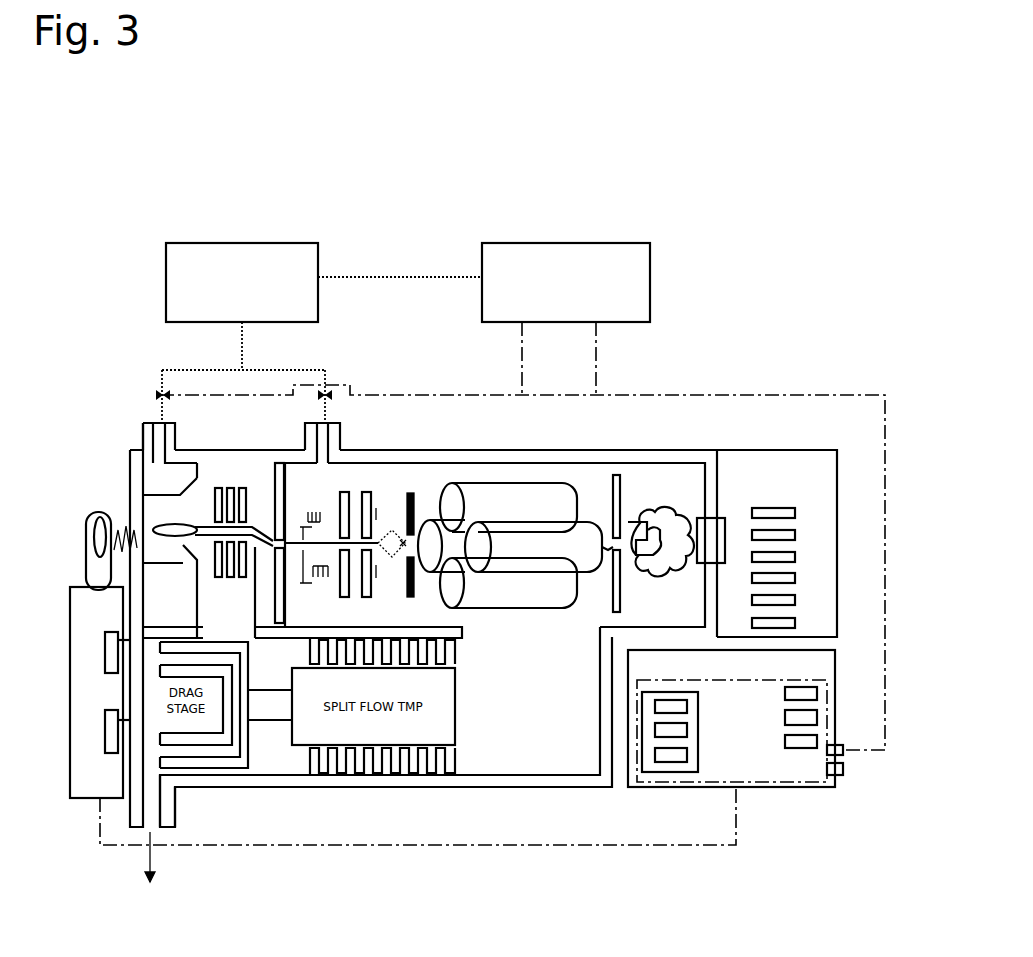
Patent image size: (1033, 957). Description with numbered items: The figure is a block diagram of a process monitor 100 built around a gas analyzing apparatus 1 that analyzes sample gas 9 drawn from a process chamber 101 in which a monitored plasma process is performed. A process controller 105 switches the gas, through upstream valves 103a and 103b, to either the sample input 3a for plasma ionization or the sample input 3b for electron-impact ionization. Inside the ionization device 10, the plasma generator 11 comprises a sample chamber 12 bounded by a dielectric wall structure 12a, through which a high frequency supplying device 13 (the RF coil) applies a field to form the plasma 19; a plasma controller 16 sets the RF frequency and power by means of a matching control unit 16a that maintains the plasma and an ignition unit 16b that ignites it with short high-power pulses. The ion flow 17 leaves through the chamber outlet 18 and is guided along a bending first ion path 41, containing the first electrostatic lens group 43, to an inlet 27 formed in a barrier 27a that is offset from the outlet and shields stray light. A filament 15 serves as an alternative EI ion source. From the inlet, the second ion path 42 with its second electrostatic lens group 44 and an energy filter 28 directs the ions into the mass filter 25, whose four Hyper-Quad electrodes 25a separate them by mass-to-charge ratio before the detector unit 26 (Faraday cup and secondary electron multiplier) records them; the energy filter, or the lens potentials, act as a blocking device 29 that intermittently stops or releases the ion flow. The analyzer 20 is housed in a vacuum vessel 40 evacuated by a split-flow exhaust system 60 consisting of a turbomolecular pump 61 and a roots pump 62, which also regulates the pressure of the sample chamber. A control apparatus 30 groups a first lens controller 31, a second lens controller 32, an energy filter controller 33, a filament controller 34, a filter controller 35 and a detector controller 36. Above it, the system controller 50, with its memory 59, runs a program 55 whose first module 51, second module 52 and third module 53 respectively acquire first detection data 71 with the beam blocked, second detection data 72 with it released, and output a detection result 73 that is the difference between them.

The process monitor 100 is at (718, 205).
The gas analyzing apparatus 1 is at (727, 378).
The process chamber 101 is at (253, 250).
The process controller 105 is at (568, 250).
The valve 103a is at (160, 393).
The valve 103b is at (330, 393).
The sample gas 9 is at (142, 405).
The sample input 3a is at (177, 421).
The sample input 3b is at (342, 421).
The ionization device 10 is at (118, 448).
The plasma generator 11 is at (115, 467).
The sample chamber 12 is at (143, 507).
The dielectric wall structure 12a is at (137, 557).
The high frequency supplying device 13 is at (86, 546).
The plasma 19 is at (172, 536).
The plasma controller 16 is at (74, 798).
The matching control unit 16a is at (115, 633).
The ignition unit 16b is at (113, 753).
The chamber outlet 18 is at (200, 547).
The first ion path 41 is at (255, 510).
The barrier 27a is at (282, 487).
The inlet 27 is at (273, 545).
The first electrostatic lens group 43 is at (230, 598).
The filament 15 is at (318, 512).
The ion flow 17 is at (300, 562).
The second electrostatic lens group 44 is at (403, 584).
The second ion path 42 is at (393, 503).
The blocking device 29 is at (399, 511).
The energy filter 28 is at (410, 582).
The mass filter 25 is at (517, 468).
The electrode 25a is at (538, 495).
The detector unit 26 is at (660, 478).
The analyzer 20 is at (603, 437).
The vacuum vessel 40 is at (638, 460).
The control apparatus 30 is at (772, 465).
The first lens controller 31 is at (795, 513).
The second lens controller 32 is at (795, 535).
The energy filter controller 33 is at (795, 557).
The filament controller 34 is at (795, 578).
The filter controller 35 is at (795, 600).
The detector controller 36 is at (795, 623).
The system controller 50 is at (800, 790).
The first module 51 is at (688, 708).
The second module 52 is at (688, 733).
The third module 53 is at (688, 756).
The program 55 is at (650, 768).
The memory 59 is at (776, 775).
The first detection data 71 is at (817, 693).
The second detection data 72 is at (817, 717).
The detection result 73 is at (817, 742).
The exhaust system 60 is at (367, 812).
The turbomolecular pump 61 is at (342, 800).
The roots pump 62 is at (207, 800).